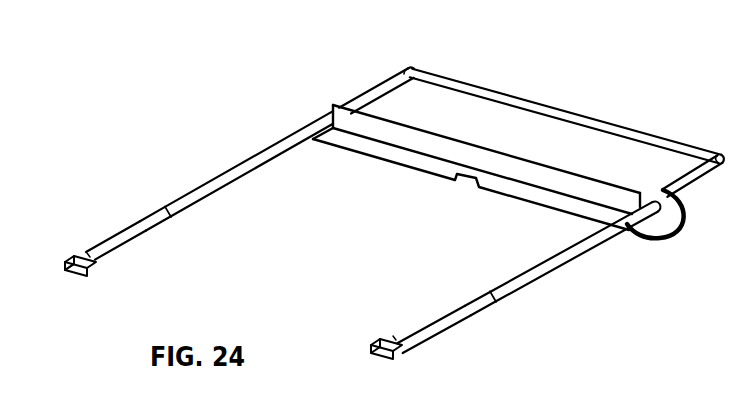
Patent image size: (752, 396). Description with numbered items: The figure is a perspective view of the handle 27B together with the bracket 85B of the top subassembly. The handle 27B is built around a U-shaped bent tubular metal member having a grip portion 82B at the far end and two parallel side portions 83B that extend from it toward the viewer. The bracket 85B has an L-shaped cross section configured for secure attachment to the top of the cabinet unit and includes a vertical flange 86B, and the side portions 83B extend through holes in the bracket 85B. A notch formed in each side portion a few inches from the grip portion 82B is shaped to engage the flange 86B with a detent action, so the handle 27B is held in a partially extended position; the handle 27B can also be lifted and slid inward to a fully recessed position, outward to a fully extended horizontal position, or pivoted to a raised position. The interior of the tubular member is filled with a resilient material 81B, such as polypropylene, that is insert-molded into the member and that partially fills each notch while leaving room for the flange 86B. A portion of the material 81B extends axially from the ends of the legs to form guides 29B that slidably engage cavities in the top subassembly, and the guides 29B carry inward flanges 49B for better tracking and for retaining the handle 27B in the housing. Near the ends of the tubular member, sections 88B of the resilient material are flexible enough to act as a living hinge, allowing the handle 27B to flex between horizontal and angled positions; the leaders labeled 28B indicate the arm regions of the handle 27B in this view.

The handle 27B is at (558, 90).
The grip portion 82B is at (483, 87).
The side portions 83B is at (240, 163).
The bracket 85B is at (681, 236).
The arm 28B is at (227, 180).
The sections of resilient material 88B is at (157, 223).
The resilient material 81B is at (128, 227).
The inward flanges 49B is at (88, 272).
The guides 29B is at (63, 265).
The vertical flange 86B is at (548, 165).